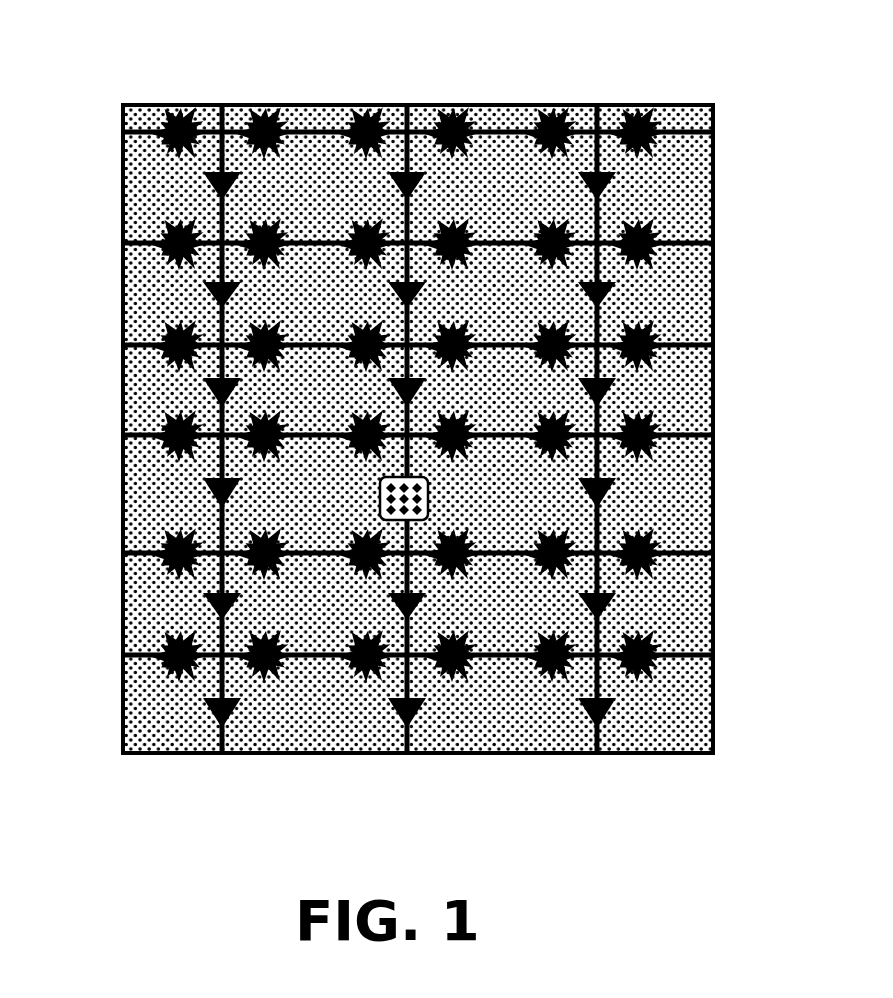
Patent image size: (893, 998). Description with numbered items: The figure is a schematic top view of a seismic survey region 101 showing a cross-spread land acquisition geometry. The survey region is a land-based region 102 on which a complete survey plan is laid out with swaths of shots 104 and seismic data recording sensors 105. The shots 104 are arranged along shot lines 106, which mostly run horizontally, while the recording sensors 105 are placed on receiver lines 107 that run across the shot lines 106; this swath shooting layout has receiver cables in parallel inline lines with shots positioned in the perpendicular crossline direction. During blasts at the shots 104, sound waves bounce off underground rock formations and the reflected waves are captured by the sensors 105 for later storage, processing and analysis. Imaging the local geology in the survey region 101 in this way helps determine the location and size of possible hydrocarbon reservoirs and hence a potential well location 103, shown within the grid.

The seismic survey region 101 is at (455, 63).
The land-based region 102 is at (158, 710).
The potential well location 103 is at (380, 508).
The shots 104 is at (185, 130).
The seismic data recording sensors 105 is at (212, 182).
The shot lines 106 is at (680, 131).
The receiver lines 107 is at (598, 327).